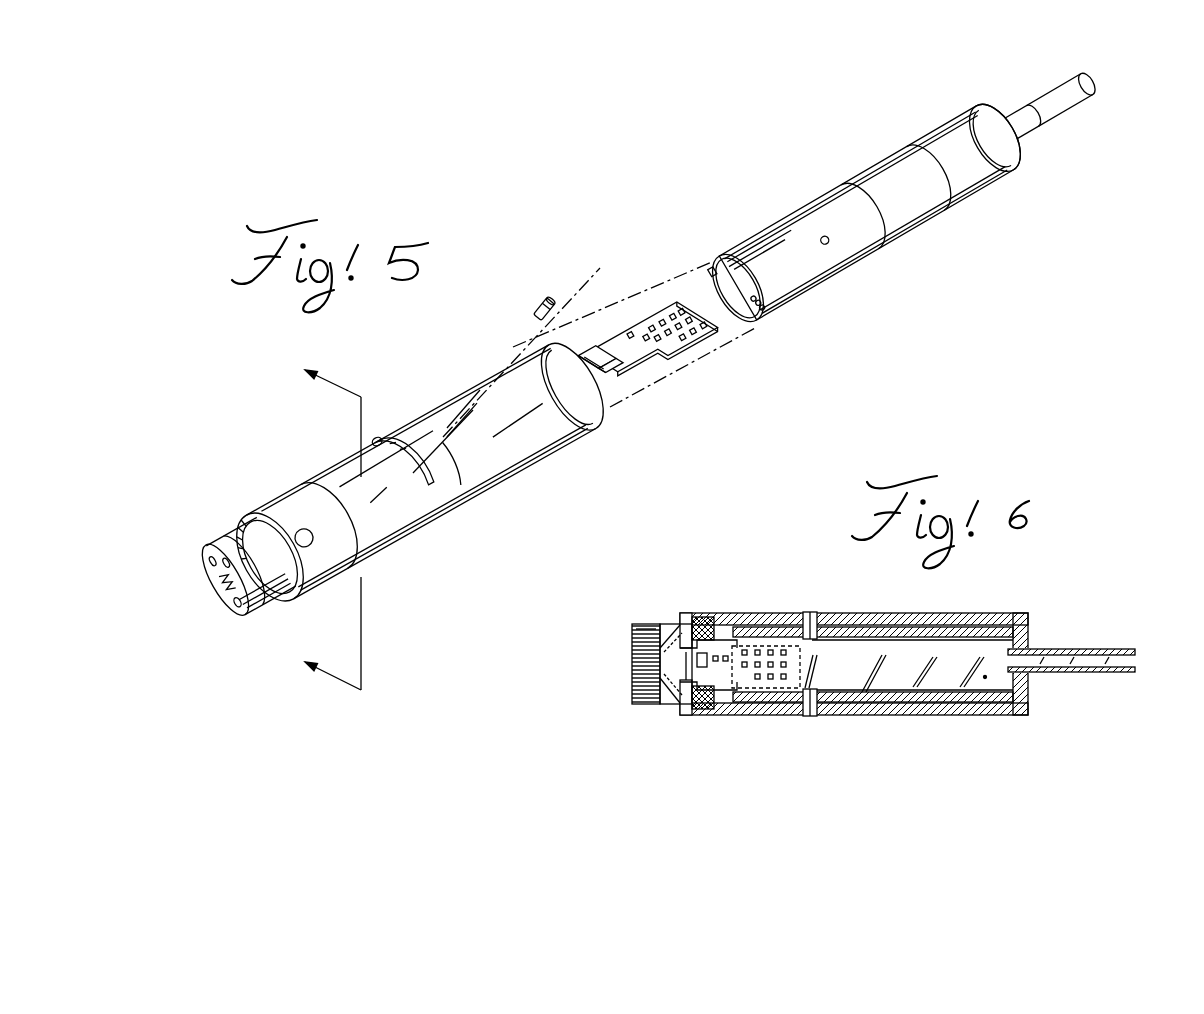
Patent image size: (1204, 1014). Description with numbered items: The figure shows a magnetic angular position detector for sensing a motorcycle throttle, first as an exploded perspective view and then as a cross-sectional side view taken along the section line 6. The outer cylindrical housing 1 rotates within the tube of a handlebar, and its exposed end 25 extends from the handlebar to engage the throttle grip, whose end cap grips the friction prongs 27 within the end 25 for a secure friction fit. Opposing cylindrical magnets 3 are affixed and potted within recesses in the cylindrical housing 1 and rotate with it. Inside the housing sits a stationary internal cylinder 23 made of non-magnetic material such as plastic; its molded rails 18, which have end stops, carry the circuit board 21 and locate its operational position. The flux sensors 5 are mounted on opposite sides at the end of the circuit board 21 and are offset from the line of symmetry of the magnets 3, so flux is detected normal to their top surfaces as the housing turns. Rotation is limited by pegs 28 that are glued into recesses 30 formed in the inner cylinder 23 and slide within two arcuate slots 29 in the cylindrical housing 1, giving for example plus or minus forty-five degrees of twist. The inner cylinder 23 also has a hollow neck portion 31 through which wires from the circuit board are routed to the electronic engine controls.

In FIG. 5, the cylindrical housing 1 is at (551, 452).
In FIG. 6, the cylindrical housing 1 is at (866, 716).
In FIG. 5, the cylindrical magnets 3 is at (302, 528).
In FIG. 6, the cylindrical magnets 3 is at (705, 652).
In FIG. 5, the flux sensors 5 is at (627, 355).
In FIG. 6, the flux sensors 5 is at (743, 628).
In FIG. 5, the section line 6- 6 is at (322, 525).
In FIG. 5, the molded rails 18 is at (711, 276).
In FIG. 5, the circuit board 21 is at (707, 337).
In FIG. 5, the internal cylinder 23 is at (933, 137).
In FIG. 6, the internal cylinder 23 is at (985, 678).
In FIG. 5, the exposed end 25 is at (233, 533).
In FIG. 6, the exposed end 25 is at (650, 625).
In FIG. 5, the friction prongs 27 is at (222, 608).
In FIG. 6, the friction prongs 27 is at (632, 688).
In FIG. 5, the pegs 28 is at (553, 300).
In FIG. 6, the pegs 28 is at (812, 618).
In FIG. 5, the arcuate slots 29 is at (412, 522).
In FIG. 5, the recesses 30 is at (828, 230).
In FIG. 6, the recesses 30 is at (810, 692).
In FIG. 5, the hollow neck portion 31 is at (1068, 115).
In FIG. 6, the hollow neck portion 31 is at (1070, 649).